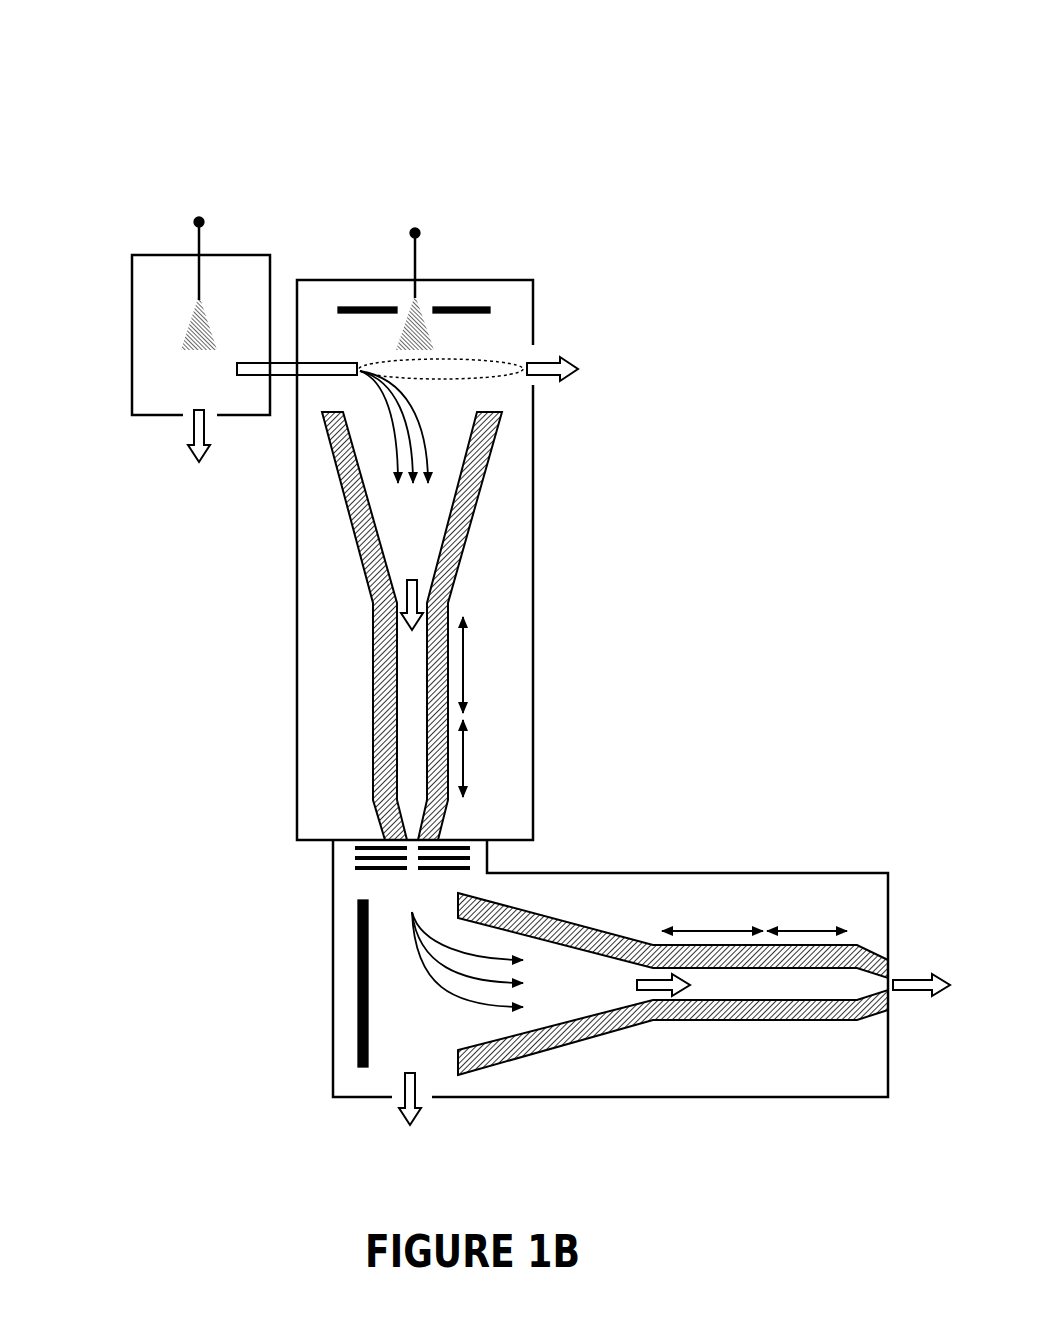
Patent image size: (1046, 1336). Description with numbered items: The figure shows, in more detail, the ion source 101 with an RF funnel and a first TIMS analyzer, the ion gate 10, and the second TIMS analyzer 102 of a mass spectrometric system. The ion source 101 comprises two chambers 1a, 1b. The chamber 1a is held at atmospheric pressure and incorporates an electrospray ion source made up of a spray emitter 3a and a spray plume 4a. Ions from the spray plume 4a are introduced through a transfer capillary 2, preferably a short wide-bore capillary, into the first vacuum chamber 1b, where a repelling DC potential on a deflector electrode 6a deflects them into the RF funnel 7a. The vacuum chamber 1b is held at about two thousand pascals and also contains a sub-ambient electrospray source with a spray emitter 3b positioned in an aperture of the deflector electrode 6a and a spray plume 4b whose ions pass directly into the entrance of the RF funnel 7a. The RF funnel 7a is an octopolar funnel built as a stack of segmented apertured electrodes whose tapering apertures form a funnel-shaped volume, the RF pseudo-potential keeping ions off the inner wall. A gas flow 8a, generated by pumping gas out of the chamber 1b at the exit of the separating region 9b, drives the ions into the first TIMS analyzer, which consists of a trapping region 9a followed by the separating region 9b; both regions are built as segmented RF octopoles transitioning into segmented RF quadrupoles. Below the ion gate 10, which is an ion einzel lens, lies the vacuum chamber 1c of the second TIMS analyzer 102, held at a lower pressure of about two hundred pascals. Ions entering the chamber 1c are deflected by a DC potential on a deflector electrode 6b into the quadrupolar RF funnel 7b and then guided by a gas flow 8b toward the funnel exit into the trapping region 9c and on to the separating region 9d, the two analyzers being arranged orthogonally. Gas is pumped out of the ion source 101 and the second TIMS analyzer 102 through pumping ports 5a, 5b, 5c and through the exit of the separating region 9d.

The ion source 101 is at (336, 155).
The second TIMS analyzer 102 is at (723, 812).
The chamber 1a is at (135, 228).
The first vacuum chamber 1b is at (296, 746).
The vacuum chamber 1c is at (760, 1100).
The transfer capillary 2 is at (283, 362).
The spray emitter 3a is at (192, 272).
The spray emitter 3b is at (400, 262).
The spray plume 4a is at (170, 345).
The spray plume 4b is at (430, 338).
The pumping port 5a is at (185, 425).
The pumping port 5b is at (537, 355).
The pumping port 5c is at (434, 1107).
The deflector electrode 6a is at (412, 298).
The deflector electrode 6b is at (356, 991).
The RF funnel 7a is at (480, 540).
The quadrupolar RF funnel 7b is at (565, 1052).
The gas flow 8a is at (398, 594).
The gas flow 8b is at (662, 1000).
The trapping region 9a is at (486, 665).
The separating region 9b is at (487, 758).
The trapping region 9c is at (712, 911).
The separating region 9d is at (807, 911).
The ion gate 10 is at (352, 870).